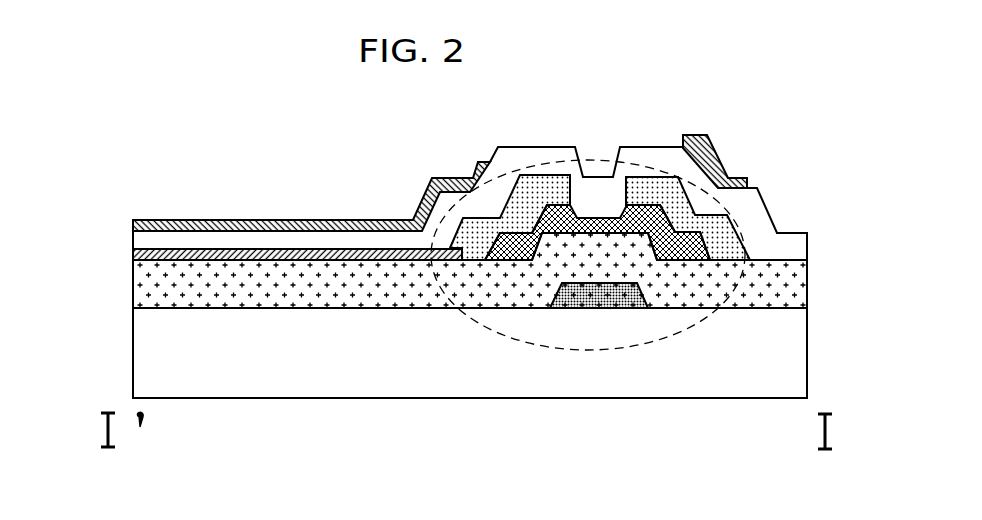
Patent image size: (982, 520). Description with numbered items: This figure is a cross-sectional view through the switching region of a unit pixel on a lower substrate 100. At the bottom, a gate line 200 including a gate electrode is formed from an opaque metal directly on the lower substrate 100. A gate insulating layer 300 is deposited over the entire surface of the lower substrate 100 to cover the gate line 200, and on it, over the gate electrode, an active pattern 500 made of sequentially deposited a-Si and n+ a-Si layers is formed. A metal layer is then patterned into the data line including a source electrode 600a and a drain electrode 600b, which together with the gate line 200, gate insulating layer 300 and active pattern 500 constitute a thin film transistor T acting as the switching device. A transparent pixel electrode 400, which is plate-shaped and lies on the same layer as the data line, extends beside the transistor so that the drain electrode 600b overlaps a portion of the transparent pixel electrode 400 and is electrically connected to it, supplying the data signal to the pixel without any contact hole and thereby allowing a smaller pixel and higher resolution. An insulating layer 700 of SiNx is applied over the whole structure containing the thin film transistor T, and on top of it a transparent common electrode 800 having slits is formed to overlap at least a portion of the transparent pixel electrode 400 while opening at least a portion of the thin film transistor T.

The lower substrate 100 is at (147, 355).
The gate line 200 is at (597, 295).
The gate insulating layer 300 is at (144, 289).
The transparent pixel electrode 400 is at (134, 257).
The active pattern 500 is at (717, 198).
The source electrode 600a is at (652, 190).
The drain electrode 600b is at (542, 190).
The insulating layer 700 is at (455, 197).
The transparent common electrode 800 is at (236, 220).
The thin film transistor T is at (658, 341).